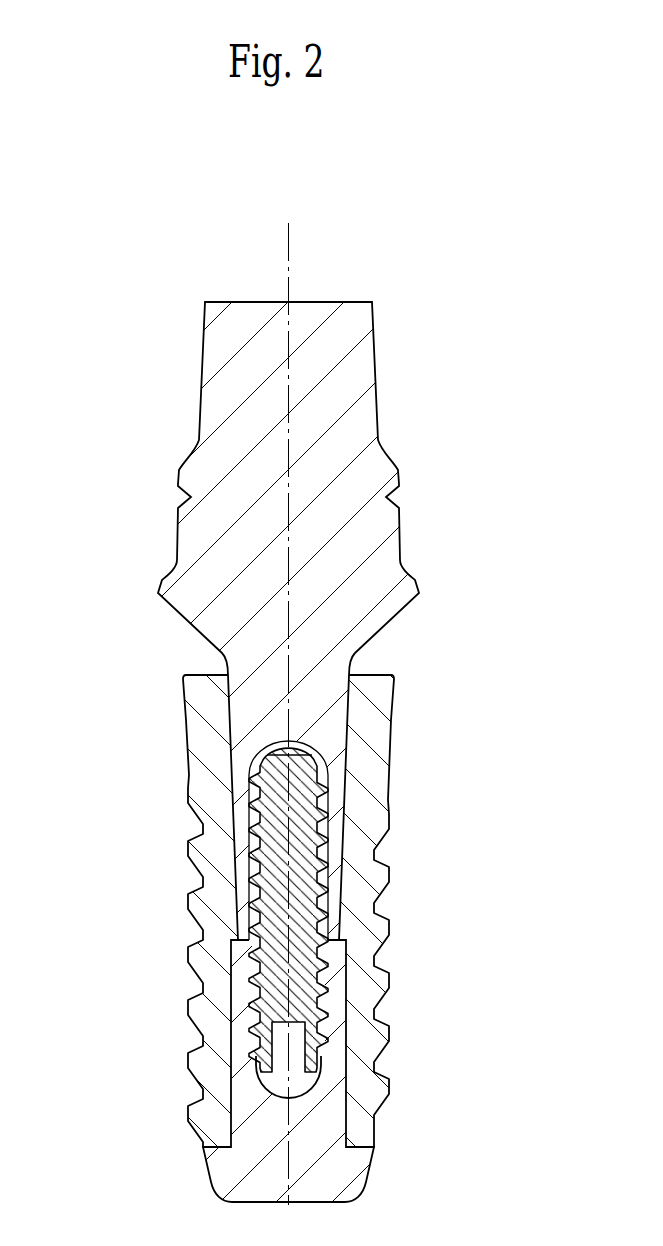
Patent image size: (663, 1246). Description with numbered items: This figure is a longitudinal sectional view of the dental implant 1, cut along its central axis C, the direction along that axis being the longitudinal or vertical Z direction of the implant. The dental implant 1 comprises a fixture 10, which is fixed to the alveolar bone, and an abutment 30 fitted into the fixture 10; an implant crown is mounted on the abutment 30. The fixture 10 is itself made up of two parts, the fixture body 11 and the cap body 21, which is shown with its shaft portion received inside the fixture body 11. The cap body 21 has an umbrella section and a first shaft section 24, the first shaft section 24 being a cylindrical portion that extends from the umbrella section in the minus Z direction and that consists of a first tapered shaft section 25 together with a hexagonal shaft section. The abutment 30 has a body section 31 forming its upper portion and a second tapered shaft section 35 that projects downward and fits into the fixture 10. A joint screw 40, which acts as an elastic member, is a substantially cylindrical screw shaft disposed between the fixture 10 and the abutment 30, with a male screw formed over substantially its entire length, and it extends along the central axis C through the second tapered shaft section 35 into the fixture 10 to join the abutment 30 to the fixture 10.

The dental implant 1 is at (296, 710).
The central axis C is at (289, 257).
The fixture 10 is at (296, 938).
The fixture body 11 is at (363, 853).
The cap body 21 is at (275, 1071).
The first shaft section 24 is at (188, 1077).
The first tapered shaft section 25 is at (240, 1090).
The abutment 30 is at (325, 621).
The body section 31 is at (357, 542).
The second tapered shaft section 35 is at (332, 723).
The joint screw 40 is at (317, 803).